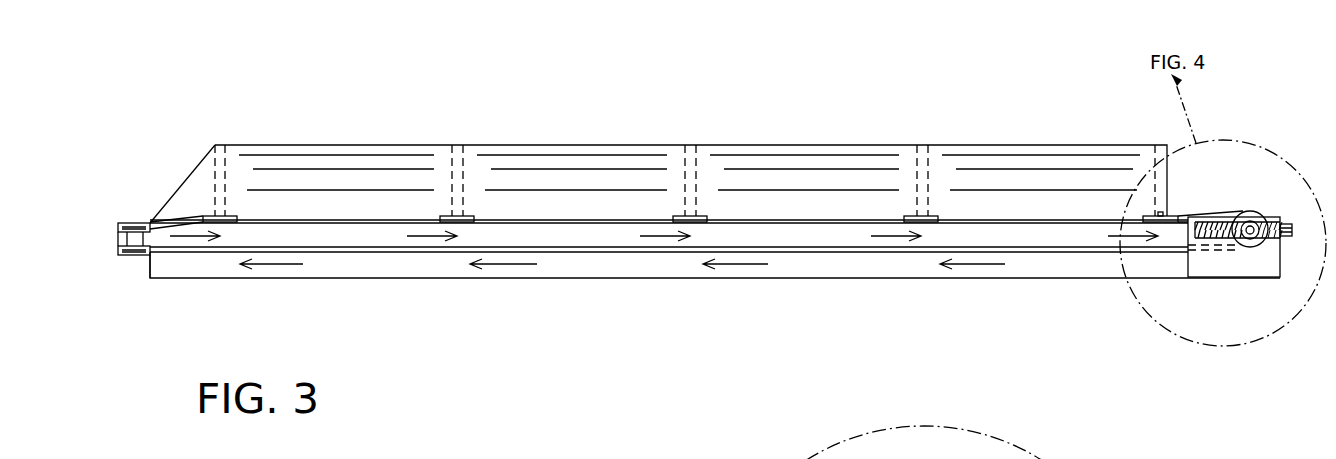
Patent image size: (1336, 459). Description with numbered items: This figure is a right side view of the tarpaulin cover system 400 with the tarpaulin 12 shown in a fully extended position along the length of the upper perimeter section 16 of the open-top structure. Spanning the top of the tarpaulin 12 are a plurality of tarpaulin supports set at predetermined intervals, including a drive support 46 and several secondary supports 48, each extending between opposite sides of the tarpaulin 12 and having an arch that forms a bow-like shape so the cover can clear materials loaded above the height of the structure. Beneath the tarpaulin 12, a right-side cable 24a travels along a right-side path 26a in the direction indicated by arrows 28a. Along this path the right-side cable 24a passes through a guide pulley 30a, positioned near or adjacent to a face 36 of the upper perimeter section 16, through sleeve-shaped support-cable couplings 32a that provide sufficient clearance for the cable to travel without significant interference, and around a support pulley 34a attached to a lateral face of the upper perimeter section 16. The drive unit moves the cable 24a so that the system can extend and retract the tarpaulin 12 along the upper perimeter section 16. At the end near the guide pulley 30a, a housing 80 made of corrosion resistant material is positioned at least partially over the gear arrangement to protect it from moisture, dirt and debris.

The tarpaulin cover system 400 is at (183, 93).
The tarpaulin 12 is at (561, 158).
The secondary supports 48 is at (216, 188).
The support-cable coupling 32a is at (227, 216).
The drive support 46 is at (1158, 155).
The guide pulley 30a is at (128, 223).
The housing 80 is at (113, 253).
The face 36 is at (148, 270).
The upper perimeter section 16 is at (392, 266).
The right-side path 26a is at (745, 270).
The arrows 28a is at (967, 263).
The right-side cable 24a is at (1052, 253).
The support pulley 34a is at (1256, 212).